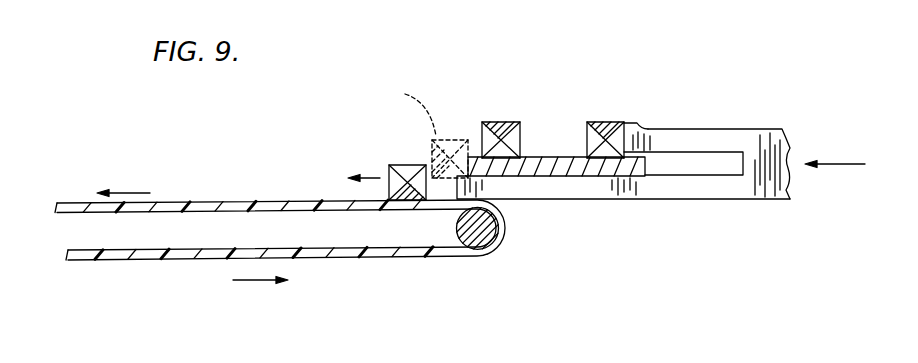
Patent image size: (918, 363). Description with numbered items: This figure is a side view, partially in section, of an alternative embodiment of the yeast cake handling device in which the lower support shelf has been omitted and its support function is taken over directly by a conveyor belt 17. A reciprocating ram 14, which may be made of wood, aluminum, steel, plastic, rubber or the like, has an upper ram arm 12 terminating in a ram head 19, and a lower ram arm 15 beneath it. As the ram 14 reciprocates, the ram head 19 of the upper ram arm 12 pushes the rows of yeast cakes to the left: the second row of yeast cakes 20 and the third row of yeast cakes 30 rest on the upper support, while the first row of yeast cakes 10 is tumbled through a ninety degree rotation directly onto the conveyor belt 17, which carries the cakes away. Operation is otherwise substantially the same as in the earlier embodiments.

The first row of yeast cakes 10 is at (395, 165).
The upper ram arm 12 is at (693, 130).
The reciprocating ram 14 is at (786, 154).
The lower ram arm 15 is at (577, 190).
The conveyor belt 17 is at (178, 203).
The ram head 19 is at (631, 126).
The second row of yeast cakes 20 is at (497, 122).
The third row of yeast cakes 30 is at (605, 122).